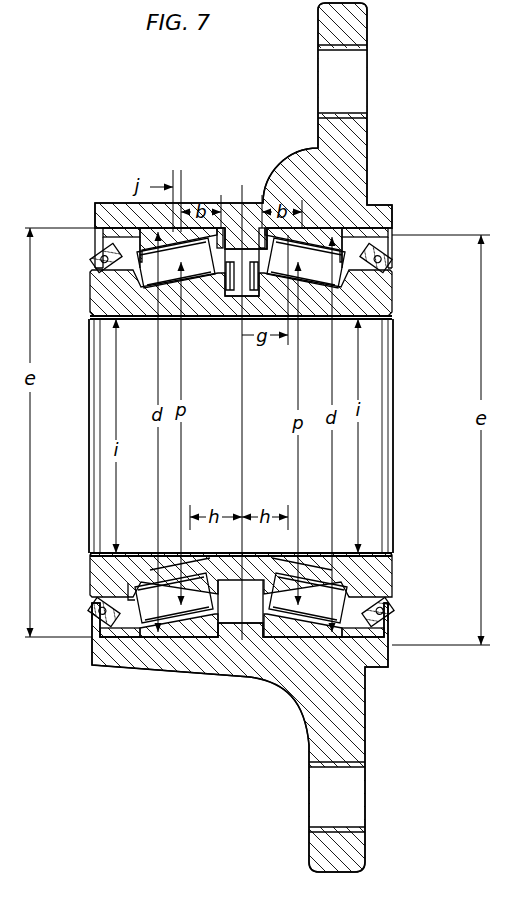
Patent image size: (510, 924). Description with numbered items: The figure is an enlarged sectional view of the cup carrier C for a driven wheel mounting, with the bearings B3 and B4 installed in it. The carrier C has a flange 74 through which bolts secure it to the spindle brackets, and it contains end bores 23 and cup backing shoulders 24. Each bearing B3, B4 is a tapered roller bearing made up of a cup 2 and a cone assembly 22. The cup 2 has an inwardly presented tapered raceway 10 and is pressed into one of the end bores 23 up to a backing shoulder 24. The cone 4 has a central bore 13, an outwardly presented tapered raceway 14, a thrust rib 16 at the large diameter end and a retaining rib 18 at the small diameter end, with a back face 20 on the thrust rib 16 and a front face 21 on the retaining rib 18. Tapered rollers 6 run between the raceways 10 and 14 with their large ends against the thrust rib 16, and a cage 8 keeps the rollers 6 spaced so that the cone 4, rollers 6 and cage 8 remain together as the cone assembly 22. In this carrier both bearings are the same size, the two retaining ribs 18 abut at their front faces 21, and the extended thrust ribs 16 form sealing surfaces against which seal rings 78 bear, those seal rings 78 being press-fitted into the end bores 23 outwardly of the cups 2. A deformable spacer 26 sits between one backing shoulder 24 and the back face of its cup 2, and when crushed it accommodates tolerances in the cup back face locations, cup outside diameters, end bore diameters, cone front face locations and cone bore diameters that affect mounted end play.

The flange 74 is at (362, 23).
The deformable spacer 26 is at (265, 240).
The end bore 23 is at (94, 231).
The seal ring 78 is at (94, 257).
The cup backing shoulder 24 is at (221, 232).
The thrust rib 16 is at (108, 285).
The front face 21 is at (222, 356).
The retaining rib 18 is at (221, 298).
The back face 20 is at (90, 300).
The cone assembly 22 is at (86, 468).
The central bore 13 is at (107, 553).
The tapered roller 6 is at (161, 606).
The cone raceway 14 is at (168, 562).
The cone 4 is at (141, 568).
The cup 2 is at (181, 640).
The cup raceway 10 is at (160, 640).
The cage 8 is at (127, 622).
The bearing B4 is at (97, 586).
The bearing B3 is at (392, 586).
The cup carrier C is at (367, 737).